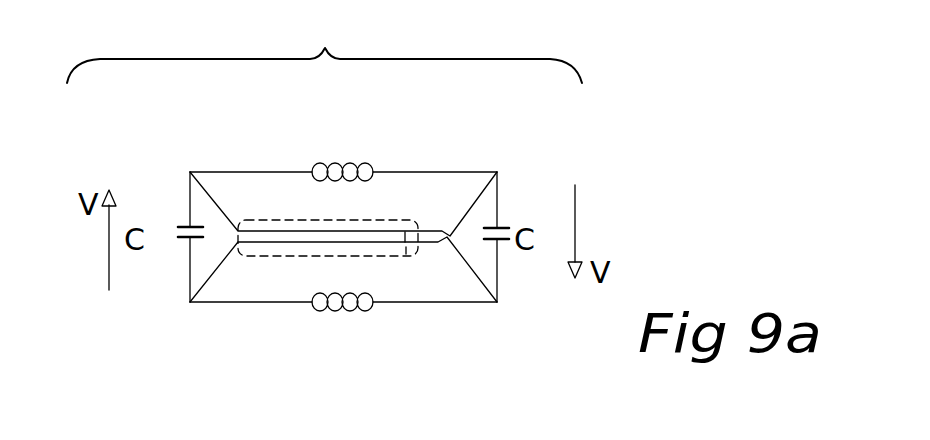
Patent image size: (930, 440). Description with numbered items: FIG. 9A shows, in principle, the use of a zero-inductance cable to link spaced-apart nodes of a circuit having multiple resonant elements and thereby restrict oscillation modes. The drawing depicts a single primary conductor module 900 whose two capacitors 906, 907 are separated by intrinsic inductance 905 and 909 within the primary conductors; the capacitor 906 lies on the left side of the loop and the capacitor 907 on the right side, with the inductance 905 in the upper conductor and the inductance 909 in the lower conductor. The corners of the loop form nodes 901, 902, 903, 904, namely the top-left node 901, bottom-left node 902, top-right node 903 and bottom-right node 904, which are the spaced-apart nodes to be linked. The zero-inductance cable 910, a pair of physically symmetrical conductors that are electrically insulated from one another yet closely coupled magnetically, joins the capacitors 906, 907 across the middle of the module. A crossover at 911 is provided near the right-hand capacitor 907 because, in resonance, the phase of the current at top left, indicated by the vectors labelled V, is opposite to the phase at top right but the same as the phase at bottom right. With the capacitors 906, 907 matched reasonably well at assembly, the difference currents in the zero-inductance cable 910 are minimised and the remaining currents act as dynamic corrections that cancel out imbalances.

The primary conductor module 900 is at (324, 41).
The first input terminal 901 is at (190, 172).
The second input terminal 902 is at (188, 302).
The first output terminal 903 is at (556, 172).
The second output terminal 904 is at (497, 303).
The intrinsic inductance 905 is at (333, 160).
The capacitor 906 is at (181, 222).
The capacitor 907 is at (485, 248).
The intrinsic inductance 909 is at (357, 315).
The zero-inductance cable 910 is at (274, 258).
The crossover 911 is at (443, 225).